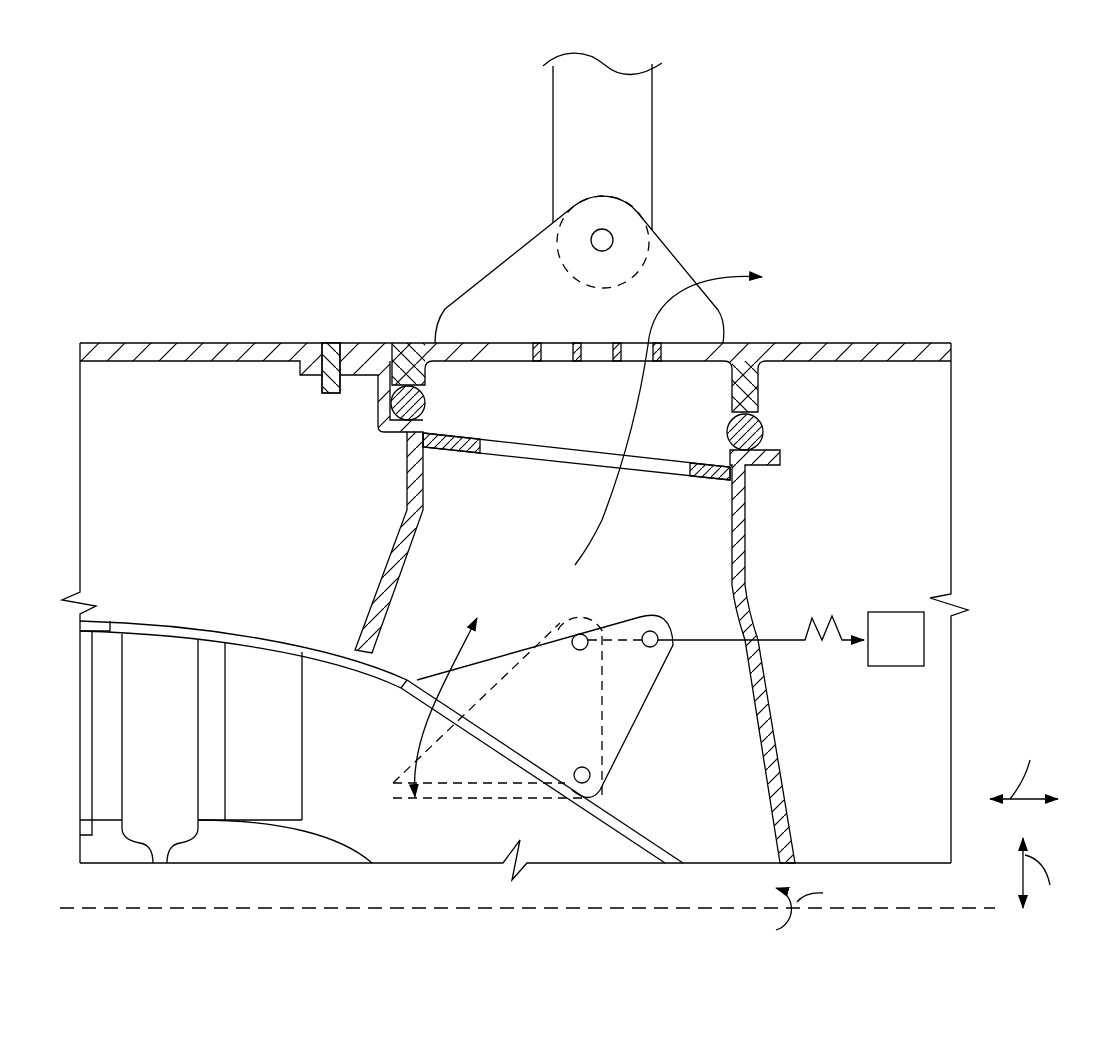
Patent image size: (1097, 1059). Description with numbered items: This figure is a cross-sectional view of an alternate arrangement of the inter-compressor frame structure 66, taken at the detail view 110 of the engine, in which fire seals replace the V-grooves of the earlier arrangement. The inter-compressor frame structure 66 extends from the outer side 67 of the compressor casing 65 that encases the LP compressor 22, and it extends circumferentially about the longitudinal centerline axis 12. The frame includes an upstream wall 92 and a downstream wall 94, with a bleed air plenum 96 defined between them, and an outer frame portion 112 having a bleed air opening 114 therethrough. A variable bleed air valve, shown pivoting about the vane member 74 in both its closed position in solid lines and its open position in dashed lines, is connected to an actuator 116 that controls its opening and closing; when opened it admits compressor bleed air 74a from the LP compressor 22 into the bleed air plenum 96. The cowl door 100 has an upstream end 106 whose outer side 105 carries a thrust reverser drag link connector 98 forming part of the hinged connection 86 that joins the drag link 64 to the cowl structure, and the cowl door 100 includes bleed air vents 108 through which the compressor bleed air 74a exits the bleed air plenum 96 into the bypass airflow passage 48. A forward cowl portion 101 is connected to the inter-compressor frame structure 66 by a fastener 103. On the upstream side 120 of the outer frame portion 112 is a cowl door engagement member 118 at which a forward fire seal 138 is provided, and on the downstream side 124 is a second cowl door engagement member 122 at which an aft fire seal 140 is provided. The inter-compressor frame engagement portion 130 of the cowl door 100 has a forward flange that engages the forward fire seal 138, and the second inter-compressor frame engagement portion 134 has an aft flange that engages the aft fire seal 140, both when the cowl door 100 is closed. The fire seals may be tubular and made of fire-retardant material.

The longitudinal centerline axis 12 is at (945, 908).
The LP compressor 22 is at (258, 866).
The bypass airflow passage 48 is at (836, 272).
The drag link 64 is at (652, 140).
The compressor casing 65 is at (177, 622).
The inter-compressor frame structure 66 is at (749, 525).
The outer side 67 is at (266, 629).
The vane 74 is at (391, 757).
The compressor bleed air 74a is at (722, 283).
The hinged connection 86 is at (511, 254).
The upstream wall 92 is at (392, 558).
The downstream wall 94 is at (742, 567).
The bleed air plenum 96 is at (692, 664).
The thrust reverser drag link connector 98 is at (680, 266).
The cowl door 100 is at (868, 341).
The forward cowl portion 101 is at (203, 343).
The fastener 103 is at (330, 343).
The outer side 105 is at (930, 338).
The upstream end 106 is at (415, 340).
The bleed air vent 108 is at (661, 367).
The detail view 110 is at (778, 234).
The outer frame portion 112 is at (455, 449).
The bleed air opening 114 is at (541, 456).
The actuator 116 is at (895, 612).
The cowl door engagement member 118 is at (377, 433).
The upstream side 120 is at (404, 460).
The second cowl door engagement member 122 is at (779, 450).
The downstream side 124 is at (749, 488).
The inter-compressor frame engagement portion 130 is at (431, 368).
The second inter-compressor frame engagement portion 134 is at (766, 372).
The forward fire seal 138 is at (428, 402).
The aft fire seal 140 is at (769, 432).